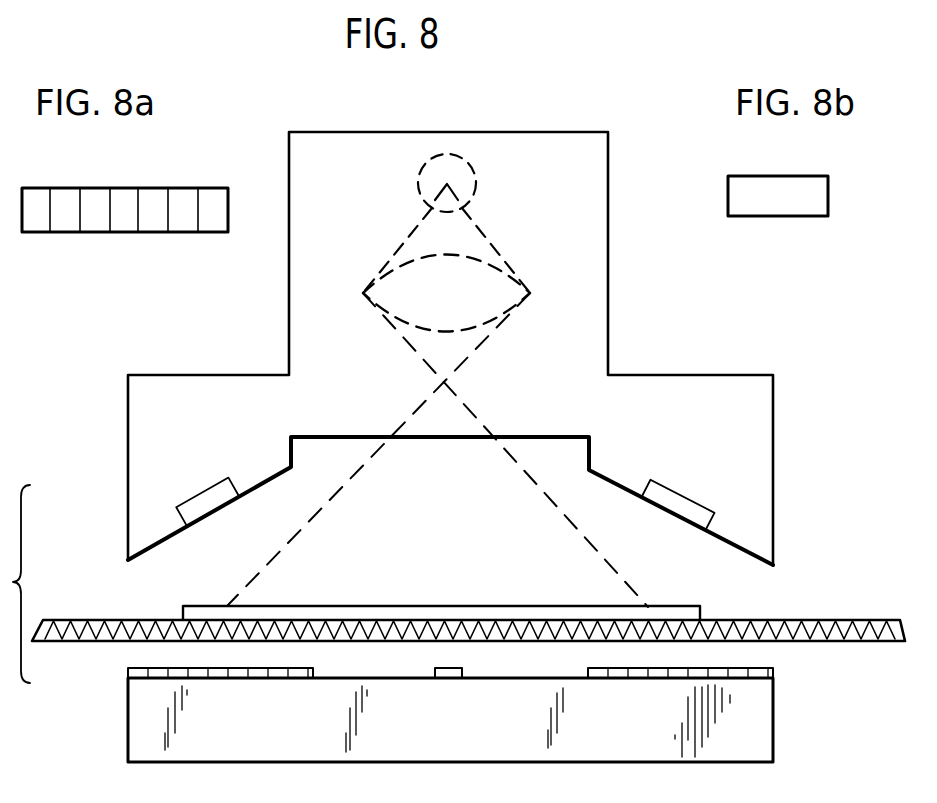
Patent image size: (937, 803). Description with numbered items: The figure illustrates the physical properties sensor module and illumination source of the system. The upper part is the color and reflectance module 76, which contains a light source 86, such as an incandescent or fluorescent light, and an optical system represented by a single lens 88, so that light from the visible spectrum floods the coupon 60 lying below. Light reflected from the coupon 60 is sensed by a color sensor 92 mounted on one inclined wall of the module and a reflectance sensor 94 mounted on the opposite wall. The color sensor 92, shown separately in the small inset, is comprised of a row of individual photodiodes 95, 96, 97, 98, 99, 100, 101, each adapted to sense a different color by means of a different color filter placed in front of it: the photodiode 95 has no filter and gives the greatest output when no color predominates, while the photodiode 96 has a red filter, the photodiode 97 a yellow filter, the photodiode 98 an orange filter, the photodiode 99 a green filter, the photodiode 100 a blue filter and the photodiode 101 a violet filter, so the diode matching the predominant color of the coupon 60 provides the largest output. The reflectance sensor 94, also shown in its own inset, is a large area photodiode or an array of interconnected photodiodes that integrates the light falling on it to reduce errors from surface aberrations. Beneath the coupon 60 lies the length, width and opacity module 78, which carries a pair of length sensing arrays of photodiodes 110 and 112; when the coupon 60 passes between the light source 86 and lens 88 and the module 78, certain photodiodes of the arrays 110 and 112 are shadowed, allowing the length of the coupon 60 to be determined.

In FIG. 8, the coupon 60 is at (452, 603).
In FIG. 8, the color and reflectance module 76 is at (338, 150).
In FIG. 8, the length, width and opacity module 78 is at (738, 737).
In FIG. 8, the light source 86 is at (535, 70).
In FIG. 8, the lens 88 is at (413, 290).
In FIG. 8, the color sensor 92 is at (182, 500).
In FIG. 8a, the color sensor 92 is at (153, 170).
In FIG. 8, the reflectance sensor 94 is at (698, 512).
In FIG. 8b, the reflectance sensor 94 is at (770, 188).
In FIG. 8a, the photodiode 95 is at (43, 221).
In FIG. 8a, the photodiode 96 is at (68, 193).
In FIG. 8a, the photodiode 97 is at (102, 223).
In FIG. 8a, the photodiode 98 is at (125, 193).
In FIG. 8a, the photodiode 99 is at (150, 223).
In FIG. 8a, the photodiode 100 is at (183, 193).
In FIG. 8a, the photodiode 101 is at (208, 223).
In FIG. 8, the length sensing array of photodiodes 110 is at (128, 661).
In FIG. 8, the length sensing array of photodiodes 112 is at (735, 666).